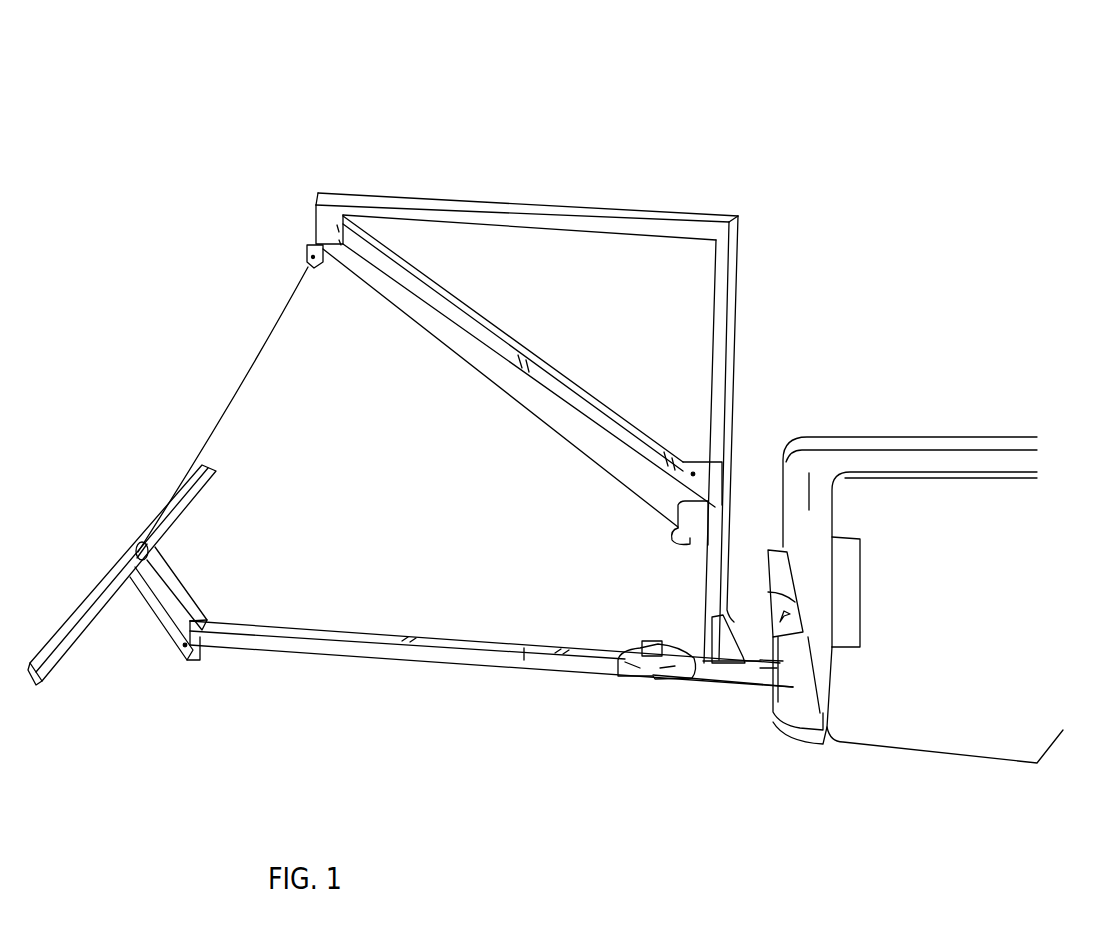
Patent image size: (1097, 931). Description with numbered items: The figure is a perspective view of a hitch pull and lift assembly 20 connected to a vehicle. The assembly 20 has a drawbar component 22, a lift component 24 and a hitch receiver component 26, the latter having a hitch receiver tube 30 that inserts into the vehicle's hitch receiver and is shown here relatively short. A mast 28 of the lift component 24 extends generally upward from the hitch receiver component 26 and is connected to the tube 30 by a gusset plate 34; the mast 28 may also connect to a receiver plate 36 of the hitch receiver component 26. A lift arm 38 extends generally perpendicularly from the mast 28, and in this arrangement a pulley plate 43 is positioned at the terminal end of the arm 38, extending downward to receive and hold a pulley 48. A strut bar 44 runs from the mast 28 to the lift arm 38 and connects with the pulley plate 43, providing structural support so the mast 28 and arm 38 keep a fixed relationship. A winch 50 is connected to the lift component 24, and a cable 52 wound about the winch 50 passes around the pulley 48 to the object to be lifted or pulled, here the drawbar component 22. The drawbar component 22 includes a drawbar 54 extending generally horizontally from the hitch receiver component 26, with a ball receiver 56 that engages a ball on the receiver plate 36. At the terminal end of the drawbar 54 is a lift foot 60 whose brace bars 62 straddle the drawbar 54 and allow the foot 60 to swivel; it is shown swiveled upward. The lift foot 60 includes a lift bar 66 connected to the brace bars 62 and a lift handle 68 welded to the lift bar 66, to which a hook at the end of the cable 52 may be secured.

The assembly 20 is at (233, 80).
The drawbar component 22 is at (328, 712).
The lift component 24 is at (695, 149).
The hitch receiver component 26 is at (724, 707).
The mast 28 is at (725, 338).
The hitch receiver tube 30 is at (762, 682).
The gusset plate 34 is at (720, 643).
The receiver plate 36 is at (690, 687).
The lift arm 38 is at (494, 205).
The pulley plate 43 is at (313, 222).
The strut bar 44 is at (497, 345).
The pulley 48 is at (314, 270).
The winch 50 is at (674, 553).
The cable 52 is at (487, 381).
The drawbar 54 is at (445, 663).
The ball receiver 56 is at (612, 630).
The lift foot 60 is at (241, 543).
The brace bars 62 is at (173, 578).
The lift bar 66 is at (70, 671).
The lift handle 68 is at (133, 567).